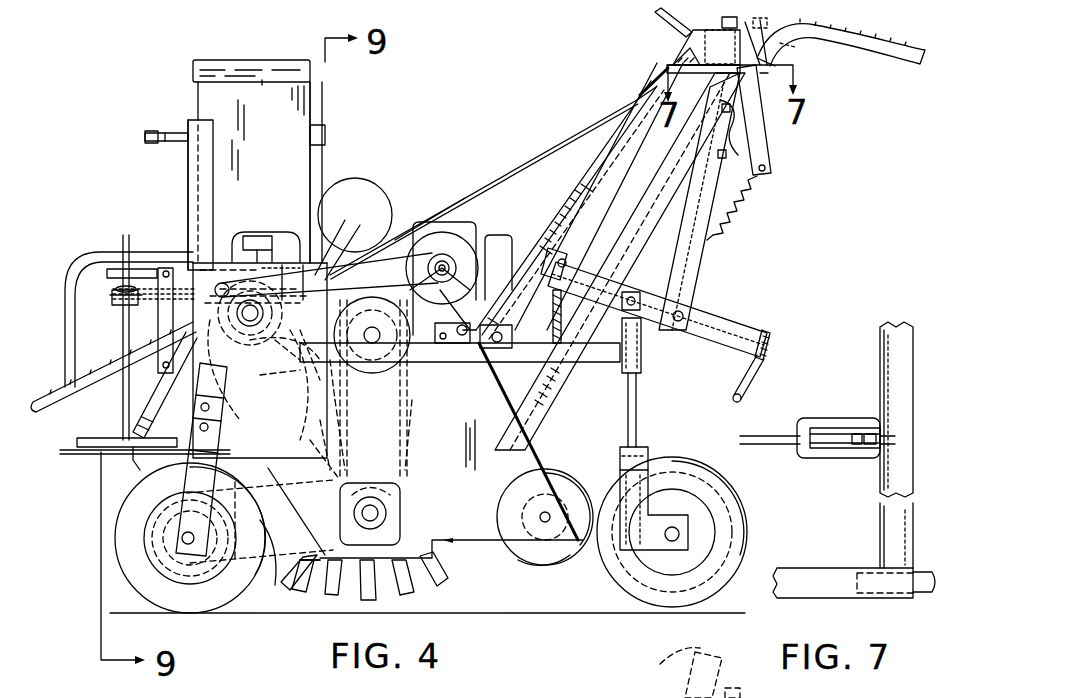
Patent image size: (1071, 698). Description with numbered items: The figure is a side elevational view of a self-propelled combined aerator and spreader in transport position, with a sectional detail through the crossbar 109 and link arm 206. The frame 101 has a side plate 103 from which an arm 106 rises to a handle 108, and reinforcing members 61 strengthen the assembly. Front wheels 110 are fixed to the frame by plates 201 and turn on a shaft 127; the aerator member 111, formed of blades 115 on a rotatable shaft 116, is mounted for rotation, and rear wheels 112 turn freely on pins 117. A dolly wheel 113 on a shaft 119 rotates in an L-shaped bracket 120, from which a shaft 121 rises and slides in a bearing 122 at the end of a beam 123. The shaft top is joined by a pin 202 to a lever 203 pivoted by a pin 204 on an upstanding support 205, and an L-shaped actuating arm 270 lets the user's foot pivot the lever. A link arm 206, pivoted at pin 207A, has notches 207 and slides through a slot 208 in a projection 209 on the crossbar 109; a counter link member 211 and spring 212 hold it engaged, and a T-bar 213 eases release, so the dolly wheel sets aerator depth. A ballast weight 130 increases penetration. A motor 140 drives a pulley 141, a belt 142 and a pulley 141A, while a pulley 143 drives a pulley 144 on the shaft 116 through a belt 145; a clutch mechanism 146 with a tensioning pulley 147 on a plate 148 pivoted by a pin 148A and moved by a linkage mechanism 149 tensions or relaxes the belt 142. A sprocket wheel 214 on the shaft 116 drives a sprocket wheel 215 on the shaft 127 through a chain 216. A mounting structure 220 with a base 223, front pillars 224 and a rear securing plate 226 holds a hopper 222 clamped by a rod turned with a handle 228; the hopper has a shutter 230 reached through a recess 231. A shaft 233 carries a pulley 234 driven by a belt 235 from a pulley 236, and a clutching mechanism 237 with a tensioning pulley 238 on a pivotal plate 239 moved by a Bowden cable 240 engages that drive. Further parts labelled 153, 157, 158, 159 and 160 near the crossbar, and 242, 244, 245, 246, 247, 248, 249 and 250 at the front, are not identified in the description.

In FIG. 4, the reinforcing members 61 is at (620, 261).
In FIG. 4, the frame 101 is at (205, 278).
In FIG. 4, the side plate 103 is at (520, 458).
In FIG. 4, the arm 106 is at (657, 197).
In FIG. 7, the arm 106 is at (840, 580).
In FIG. 4, the handle 108 is at (884, 40).
In FIG. 7, the handle 108 is at (922, 592).
In FIG. 4, the crossbar 109 is at (792, 66).
In FIG. 7, the crossbar 109 is at (892, 372).
In FIG. 4, the front wheels 110 is at (202, 600).
In FIG. 4, the aerator member 111 is at (445, 593).
In FIG. 4, the rear wheels 112 is at (522, 553).
In FIG. 4, the dolly wheel 113 is at (610, 566).
In FIG. 4, the blades 115 is at (310, 618).
In FIG. 4, the rotatable shaft 116 is at (380, 510).
In FIG. 4, the stub shafts 117 is at (540, 512).
In FIG. 4, the shaft 119 is at (670, 540).
In FIG. 4, the L-shaped bracket 120 is at (627, 483).
In FIG. 4, the shaft 121 is at (638, 400).
In FIG. 4, the bearing 122 is at (643, 345).
In FIG. 4, the beam 123 is at (513, 362).
In FIG. 4, the shaft 127 is at (186, 546).
In FIG. 4, the ballast weight 130 is at (367, 195).
In FIG. 4, the motor 140 is at (422, 222).
In FIG. 4, the pulley 141 is at (465, 262).
In FIG. 4, the pulley 141A is at (309, 450).
In FIG. 4, the belt 142 is at (422, 432).
In FIG. 4, the pulley 143 is at (359, 432).
In FIG. 4, the pulley 144 is at (371, 470).
In FIG. 4, the belt 145 is at (456, 445).
In FIG. 4, the clutch mechanism 146 is at (466, 368).
In FIG. 4, the tensioning pulley 147 is at (444, 333).
In FIG. 4, the plate 148 is at (460, 345).
In FIG. 4, the pin 148A is at (490, 325).
In FIG. 4, the linkage mechanism 149 is at (545, 206).
In FIG. 4, the upper link end 153 is at (650, 85).
In FIG. 4, the clamp insert 157 is at (712, 30).
In FIG. 4, the clamp plate 158 is at (700, 73).
In FIG. 4, the clamp cap 159 is at (723, 15).
In FIG. 4, the handle grip stub 160 is at (658, 23).
In FIG. 4, the plates 201 is at (212, 428).
In FIG. 4, the pin 202 is at (640, 292).
In FIG. 4, the lever 203 is at (583, 270).
In FIG. 4, the pin 204 is at (575, 240).
In FIG. 4, the upstanding support 205 is at (498, 328).
In FIG. 4, the link arm 206 is at (695, 255).
In FIG. 7, the link arm 206 is at (771, 437).
In FIG. 4, the notches 207 is at (734, 136).
In FIG. 4, the pin 207A is at (685, 312).
In FIG. 7, the slot 208 is at (830, 428).
In FIG. 4, the projection 209 is at (695, 62).
In FIG. 7, the projection 209 is at (815, 467).
In FIG. 4, the counter link member 211 is at (775, 138).
In FIG. 4, the spring 212 is at (745, 203).
In FIG. 4, the T-bar 213 is at (768, 22).
In FIG. 7, the T-bar 213 is at (870, 446).
In FIG. 4, the sprocket wheel 214 is at (330, 510).
In FIG. 4, the sprocket wheel 215 is at (166, 522).
In FIG. 4, the chain 216 is at (276, 566).
In FIG. 4, the mounting structure 220 is at (180, 167).
In FIG. 4, the hopper 222 is at (288, 167).
In FIG. 4, the base 223 is at (236, 240).
In FIG. 4, the front pillars 224 is at (203, 212).
In FIG. 4, the rear securing plate 226 is at (313, 168).
In FIG. 4, the handle 228 is at (155, 132).
In FIG. 4, the shutter 230 is at (270, 238).
In FIG. 4, the recess 231 is at (257, 232).
In FIG. 4, the shaft 233 is at (247, 320).
In FIG. 4, the pulley 234 is at (266, 383).
In FIG. 4, the belt 235 is at (262, 380).
In FIG. 4, the pulley 236 is at (374, 335).
In FIG. 4, the clutching mechanism 237 is at (347, 243).
In FIG. 4, the tensioning pulley 238 is at (300, 258).
In FIG. 4, the pivotal plate 239 is at (302, 363).
In FIG. 4, the Bowden cable 240 is at (550, 152).
In FIG. 4, the brace 242 is at (165, 385).
In FIG. 4, the tray support 244 is at (134, 458).
In FIG. 4, the tray 245 is at (76, 443).
In FIG. 4, the tray rail 246 is at (124, 404).
In FIG. 4, the bracket plate 247 is at (115, 268).
In FIG. 4, the adjusting nut 248 is at (115, 308).
In FIG. 4, the drive belt 249 is at (200, 296).
In FIG. 4, the drive pulley 250 is at (442, 266).
In FIG. 4, the actuating arm 270 is at (733, 384).